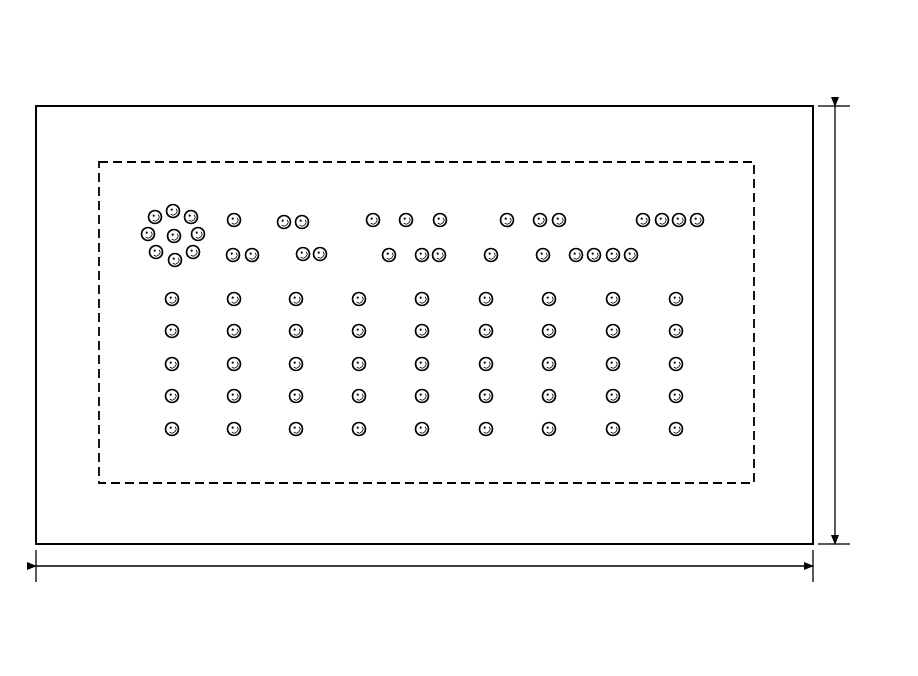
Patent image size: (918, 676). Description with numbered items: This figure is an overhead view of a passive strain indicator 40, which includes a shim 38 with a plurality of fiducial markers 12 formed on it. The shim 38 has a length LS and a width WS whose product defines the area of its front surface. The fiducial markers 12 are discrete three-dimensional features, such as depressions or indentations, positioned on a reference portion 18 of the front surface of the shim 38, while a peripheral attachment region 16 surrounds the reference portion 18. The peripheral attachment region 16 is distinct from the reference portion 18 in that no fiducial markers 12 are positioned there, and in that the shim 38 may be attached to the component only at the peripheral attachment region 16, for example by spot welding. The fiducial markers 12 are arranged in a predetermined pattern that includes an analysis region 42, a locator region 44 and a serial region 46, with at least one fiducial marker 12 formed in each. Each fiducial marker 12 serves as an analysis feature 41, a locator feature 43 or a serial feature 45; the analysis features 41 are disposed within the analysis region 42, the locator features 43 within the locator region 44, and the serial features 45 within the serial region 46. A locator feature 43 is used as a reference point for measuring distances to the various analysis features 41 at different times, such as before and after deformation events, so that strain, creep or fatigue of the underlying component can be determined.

The passive strain indicator 40 is at (91, 68).
The shim 38 is at (619, 132).
The fiducial markers 12 is at (698, 213).
The serial region 46 is at (461, 189).
The locator feature 43 is at (140, 204).
The serial feature 45 is at (260, 204).
The locator region 44 is at (130, 240).
The analysis region 42 is at (130, 398).
The analysis feature 41 is at (158, 293).
The reference portion 18 is at (707, 460).
The peripheral attachment region 16 is at (410, 525).